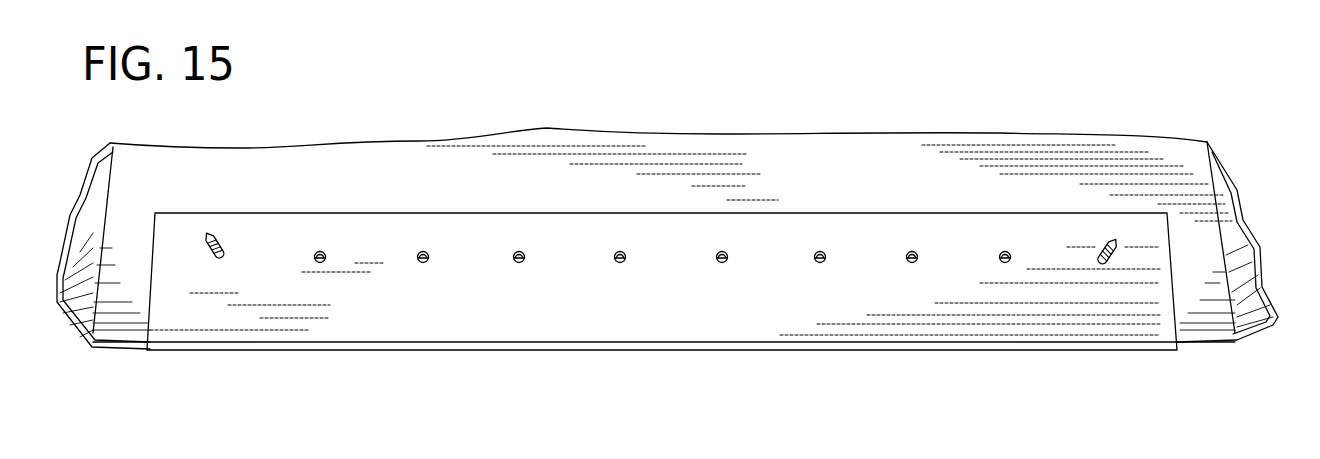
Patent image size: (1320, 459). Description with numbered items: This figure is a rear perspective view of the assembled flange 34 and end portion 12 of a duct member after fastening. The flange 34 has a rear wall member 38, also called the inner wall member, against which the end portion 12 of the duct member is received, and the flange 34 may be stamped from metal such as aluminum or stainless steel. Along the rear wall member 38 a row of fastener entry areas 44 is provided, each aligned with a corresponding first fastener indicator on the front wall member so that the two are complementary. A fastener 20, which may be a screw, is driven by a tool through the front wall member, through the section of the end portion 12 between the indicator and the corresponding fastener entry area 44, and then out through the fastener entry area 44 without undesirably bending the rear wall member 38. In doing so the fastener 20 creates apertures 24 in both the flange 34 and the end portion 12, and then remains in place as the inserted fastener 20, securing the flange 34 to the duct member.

The end portion 12 is at (343, 182).
The fastener 20 is at (212, 230).
The apertures 24 is at (310, 260).
The flange 34 is at (527, 384).
The rear wall member 38 is at (387, 322).
The fastener entry areas 44 is at (1102, 264).